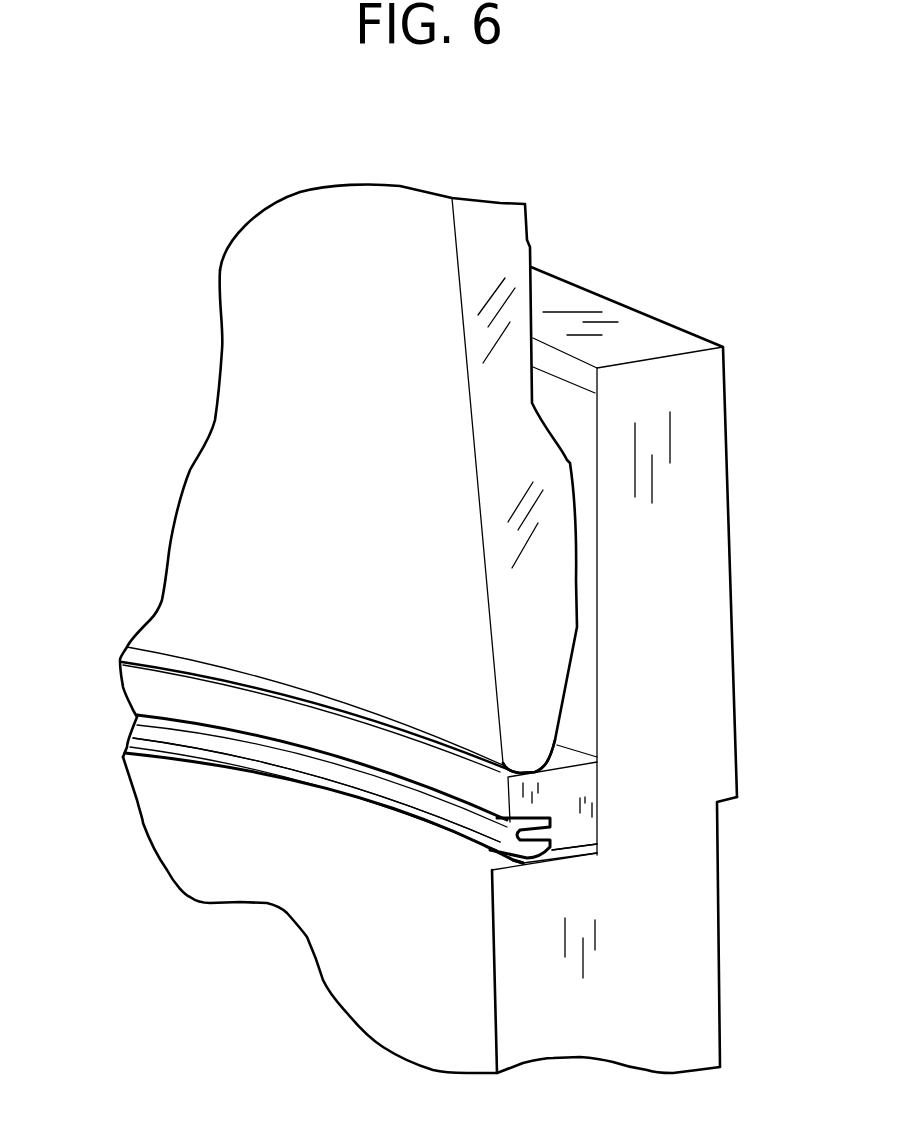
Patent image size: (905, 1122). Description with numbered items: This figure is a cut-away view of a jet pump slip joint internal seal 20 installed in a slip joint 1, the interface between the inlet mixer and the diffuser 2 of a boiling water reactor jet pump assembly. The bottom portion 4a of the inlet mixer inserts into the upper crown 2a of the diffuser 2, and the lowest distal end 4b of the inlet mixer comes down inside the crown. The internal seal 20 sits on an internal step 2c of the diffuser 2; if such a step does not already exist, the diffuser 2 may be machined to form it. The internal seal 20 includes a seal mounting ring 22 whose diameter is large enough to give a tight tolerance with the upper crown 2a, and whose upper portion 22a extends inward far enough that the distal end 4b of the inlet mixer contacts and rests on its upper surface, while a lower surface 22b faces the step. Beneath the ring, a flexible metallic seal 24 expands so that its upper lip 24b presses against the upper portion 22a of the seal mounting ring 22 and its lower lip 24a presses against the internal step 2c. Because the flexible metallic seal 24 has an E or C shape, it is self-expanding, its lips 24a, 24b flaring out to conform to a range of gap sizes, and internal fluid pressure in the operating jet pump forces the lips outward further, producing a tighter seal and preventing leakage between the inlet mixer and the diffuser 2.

The slip joint 1 is at (587, 607).
The diffuser 2 is at (650, 1023).
The upper crown 2a is at (700, 458).
The internal step 2c is at (553, 858).
The bottom portion 4a is at (513, 257).
The lowest distal end 4b is at (520, 760).
The internal seal 20 is at (285, 776).
The seal mounting ring 22 is at (567, 782).
The upper portion 22a is at (563, 760).
The seal block lower surface 22b is at (558, 837).
The flexible metallic seal 24 is at (427, 802).
The lower lip 24a is at (483, 870).
The upper lip 24b is at (480, 838).